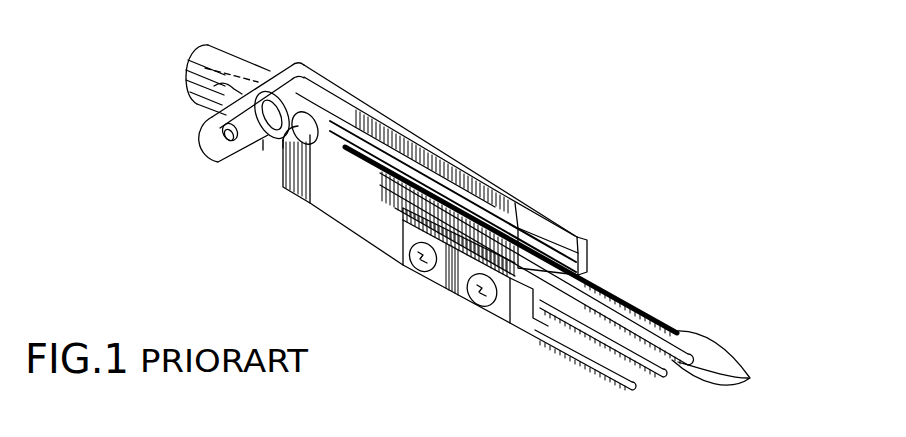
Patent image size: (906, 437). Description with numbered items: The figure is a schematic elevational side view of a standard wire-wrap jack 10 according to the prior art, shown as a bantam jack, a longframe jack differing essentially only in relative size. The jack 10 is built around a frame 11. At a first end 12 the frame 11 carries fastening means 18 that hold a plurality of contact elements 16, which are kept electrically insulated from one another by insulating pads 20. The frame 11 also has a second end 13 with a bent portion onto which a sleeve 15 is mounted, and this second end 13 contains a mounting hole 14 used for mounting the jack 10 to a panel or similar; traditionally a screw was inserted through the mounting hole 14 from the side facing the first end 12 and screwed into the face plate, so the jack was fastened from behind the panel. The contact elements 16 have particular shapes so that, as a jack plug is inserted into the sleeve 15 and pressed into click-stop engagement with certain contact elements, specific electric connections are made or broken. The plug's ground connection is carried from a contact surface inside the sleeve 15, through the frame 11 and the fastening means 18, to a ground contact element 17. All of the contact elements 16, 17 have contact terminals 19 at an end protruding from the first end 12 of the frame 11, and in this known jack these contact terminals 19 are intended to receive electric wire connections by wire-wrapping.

The jack 10 is at (460, 140).
The frame 11 is at (390, 127).
The first end 12 is at (575, 230).
The second end 13 is at (206, 98).
The mounting hole 14 is at (238, 146).
The sleeve 15 is at (232, 62).
The contact elements 16 is at (397, 205).
The ground contact element 17 is at (445, 284).
The fastening means 18 is at (421, 266).
The contact terminals 19 is at (580, 359).
The insulating pads 20 is at (565, 230).